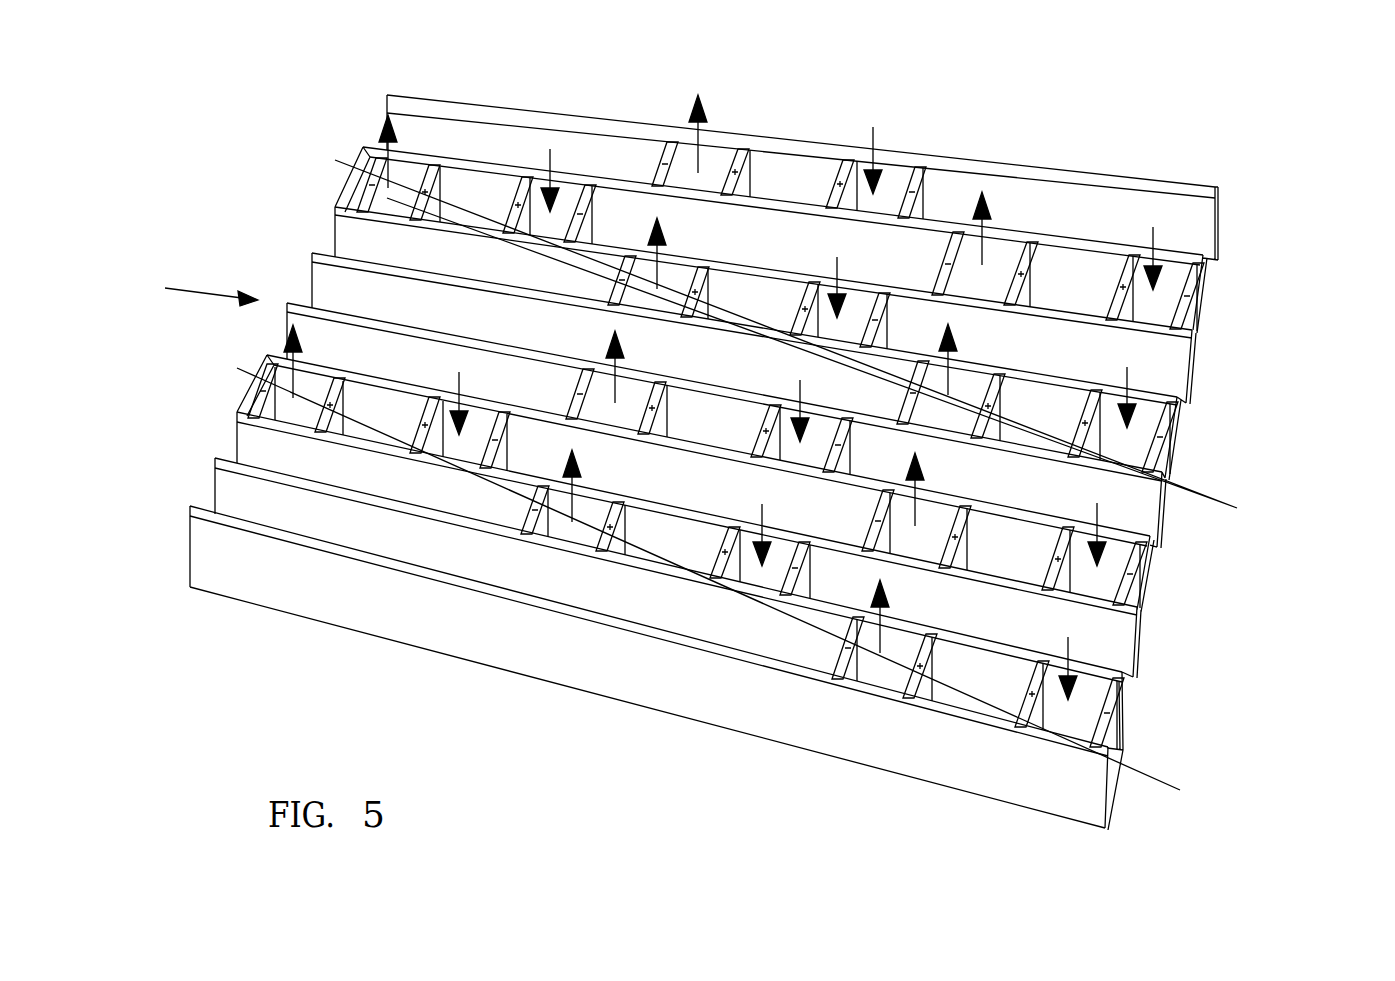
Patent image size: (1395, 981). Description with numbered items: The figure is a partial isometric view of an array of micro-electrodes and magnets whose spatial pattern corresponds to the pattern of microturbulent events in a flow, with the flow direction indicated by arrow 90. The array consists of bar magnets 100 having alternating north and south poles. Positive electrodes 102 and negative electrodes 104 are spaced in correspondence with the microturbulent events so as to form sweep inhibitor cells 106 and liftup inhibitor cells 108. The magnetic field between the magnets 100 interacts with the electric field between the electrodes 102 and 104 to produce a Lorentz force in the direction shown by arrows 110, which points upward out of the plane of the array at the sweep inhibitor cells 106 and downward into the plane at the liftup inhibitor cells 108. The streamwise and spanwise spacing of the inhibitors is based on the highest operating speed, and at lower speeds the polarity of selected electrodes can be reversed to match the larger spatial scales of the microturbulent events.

The arrow 90 is at (197, 310).
The bar magnets 100 is at (293, 307).
The positive electrodes 102 is at (513, 188).
The negative electrodes 104 is at (643, 257).
The sweep inhibitor cells 106 is at (288, 399).
The liftup inhibitor cells 108 is at (443, 450).
The arrows 110 is at (1150, 256).